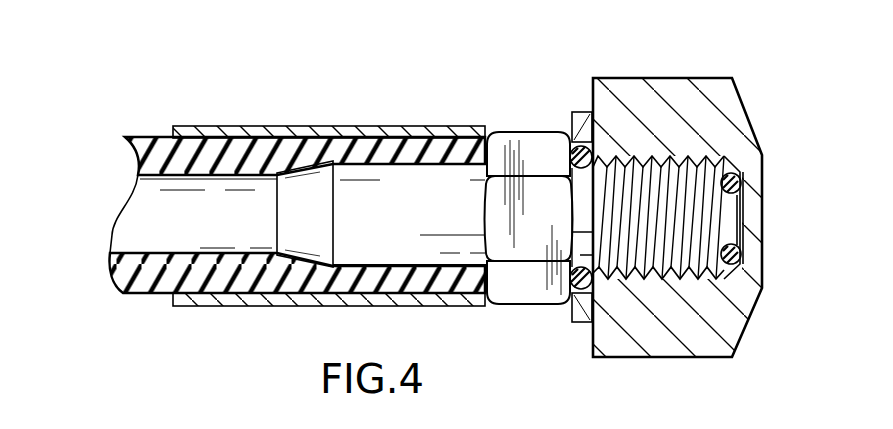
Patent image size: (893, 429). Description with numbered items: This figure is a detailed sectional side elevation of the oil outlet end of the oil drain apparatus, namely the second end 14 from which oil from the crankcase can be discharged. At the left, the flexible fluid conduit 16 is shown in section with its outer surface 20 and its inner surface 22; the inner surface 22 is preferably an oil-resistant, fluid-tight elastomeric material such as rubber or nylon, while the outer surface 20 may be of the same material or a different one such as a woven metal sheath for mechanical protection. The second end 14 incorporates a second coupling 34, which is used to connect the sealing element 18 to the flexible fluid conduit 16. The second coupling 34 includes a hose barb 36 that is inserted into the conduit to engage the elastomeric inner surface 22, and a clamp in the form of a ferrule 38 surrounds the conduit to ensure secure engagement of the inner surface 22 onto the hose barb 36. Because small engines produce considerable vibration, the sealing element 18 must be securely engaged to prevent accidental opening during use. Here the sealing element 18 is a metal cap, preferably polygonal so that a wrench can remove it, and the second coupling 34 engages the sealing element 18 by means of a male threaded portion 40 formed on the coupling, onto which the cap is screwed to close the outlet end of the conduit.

The second end 14 is at (433, 72).
The flexible fluid conduit 16 is at (155, 128).
The sealing element 18 is at (662, 78).
The outer surface 20 is at (138, 295).
The inner surface 22 is at (140, 252).
The second coupling 34 is at (530, 312).
The hose barb 36 is at (277, 236).
The ferrule 38 is at (273, 126).
The male threaded portion 40 is at (716, 217).